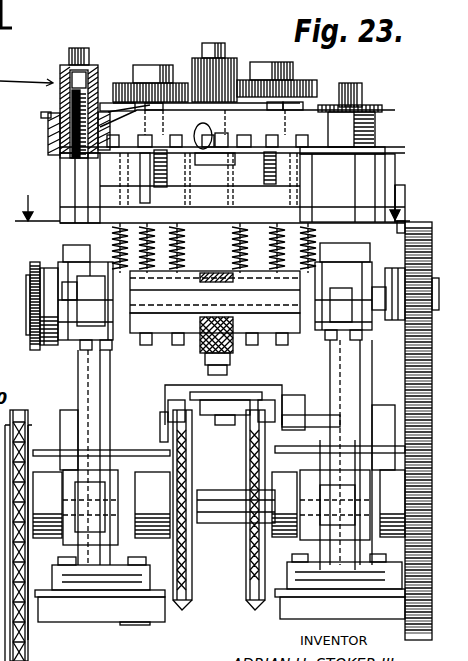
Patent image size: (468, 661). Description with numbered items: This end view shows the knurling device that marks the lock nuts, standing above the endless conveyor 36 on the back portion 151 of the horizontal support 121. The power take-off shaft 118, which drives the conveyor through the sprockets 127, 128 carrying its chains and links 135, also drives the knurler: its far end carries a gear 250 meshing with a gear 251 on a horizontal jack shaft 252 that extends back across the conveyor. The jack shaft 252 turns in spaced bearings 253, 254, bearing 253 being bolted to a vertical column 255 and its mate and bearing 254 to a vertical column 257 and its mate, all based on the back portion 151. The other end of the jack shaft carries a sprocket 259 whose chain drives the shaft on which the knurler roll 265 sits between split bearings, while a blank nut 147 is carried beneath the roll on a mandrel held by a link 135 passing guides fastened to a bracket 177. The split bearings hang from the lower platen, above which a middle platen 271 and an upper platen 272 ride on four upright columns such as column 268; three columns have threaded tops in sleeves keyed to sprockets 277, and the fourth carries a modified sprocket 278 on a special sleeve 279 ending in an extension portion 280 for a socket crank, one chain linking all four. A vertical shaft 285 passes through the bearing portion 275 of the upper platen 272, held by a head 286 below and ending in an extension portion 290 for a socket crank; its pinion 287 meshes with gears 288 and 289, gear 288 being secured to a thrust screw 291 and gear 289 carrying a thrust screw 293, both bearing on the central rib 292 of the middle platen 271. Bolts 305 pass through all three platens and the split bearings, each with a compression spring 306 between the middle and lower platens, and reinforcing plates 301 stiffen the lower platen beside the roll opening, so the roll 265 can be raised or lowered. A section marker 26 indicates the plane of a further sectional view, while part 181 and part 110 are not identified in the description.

The extension portion 280 is at (69, 63).
The special sleeve 279 is at (61, 103).
The modified sprocket 278 is at (48, 131).
The bolts 305 is at (140, 175).
The gear 288 is at (126, 83).
The thrust screw 291 is at (163, 147).
The extension portion 290 is at (228, 43).
The pinion 287 is at (234, 64).
The gear 289 is at (261, 82).
The thrust screw 293 is at (304, 101).
The vertical column 268 is at (362, 90).
The sprocket 277 is at (380, 111).
The upper platen 272 is at (370, 148).
The central rib 292 is at (327, 185).
The middle platen 271 is at (372, 187).
The section line 26 is at (214, 200).
The gear 251 is at (406, 225).
The head 286 is at (195, 132).
The vertical shaft 285 is at (222, 141).
The bearing portion 275 is at (202, 154).
The compression spring 306 is at (241, 222).
The reinforcing plates 301 is at (185, 272).
The knurler roll 265 is at (233, 354).
The blank nut 147 is at (230, 368).
The sprocket 259 is at (36, 264).
The bearing 254 is at (68, 353).
The bearing 253 is at (306, 342).
The jack shaft 252 is at (378, 322).
The gear 250 is at (409, 422).
The vertical column 257 is at (88, 382).
The vertical column 255 is at (328, 367).
The links 135 is at (185, 402).
The endless conveyor 36 is at (244, 429).
The guide 181 is at (178, 432).
The bracket 177 is at (275, 425).
The sprocket 127 is at (181, 605).
The sprocket 128 is at (255, 608).
The power take-off shaft 118 is at (230, 528).
The back portion 151 is at (108, 615).
The horizontal support 121 is at (153, 630).
The column 110 is at (30, 637).